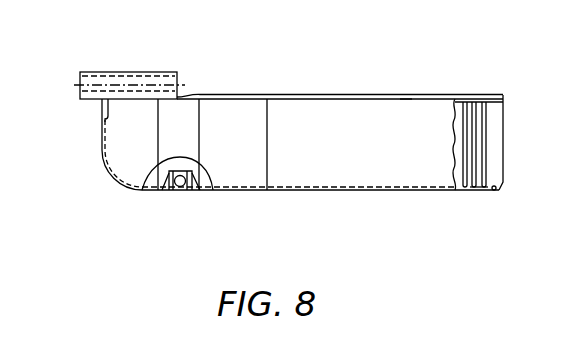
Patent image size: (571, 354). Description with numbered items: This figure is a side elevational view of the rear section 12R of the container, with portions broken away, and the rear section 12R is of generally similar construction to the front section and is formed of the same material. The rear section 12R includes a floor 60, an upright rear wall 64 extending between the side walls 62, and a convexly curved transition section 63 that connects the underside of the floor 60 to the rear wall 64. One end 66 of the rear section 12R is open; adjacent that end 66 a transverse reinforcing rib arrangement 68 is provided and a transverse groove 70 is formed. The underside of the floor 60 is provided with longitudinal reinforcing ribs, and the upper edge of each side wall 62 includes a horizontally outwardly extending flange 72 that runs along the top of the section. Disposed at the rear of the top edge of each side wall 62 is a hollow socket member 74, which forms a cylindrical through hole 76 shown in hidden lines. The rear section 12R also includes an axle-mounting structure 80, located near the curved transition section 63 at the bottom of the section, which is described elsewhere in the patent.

The rear section 12R is at (408, 88).
The floor 60 is at (356, 188).
The side walls 62 is at (298, 186).
The convexly curved transition section 63 is at (110, 177).
The upright rear wall 64 is at (102, 137).
The front end 66 is at (502, 105).
The transverse reinforcing rib arrangement 68 is at (486, 155).
The transverse groove 70 is at (493, 192).
The flange 72 is at (303, 95).
The hollow socket member 74 is at (162, 72).
The cylindrical through hole 76 is at (97, 78).
The axle-mounting structure 80 is at (186, 160).